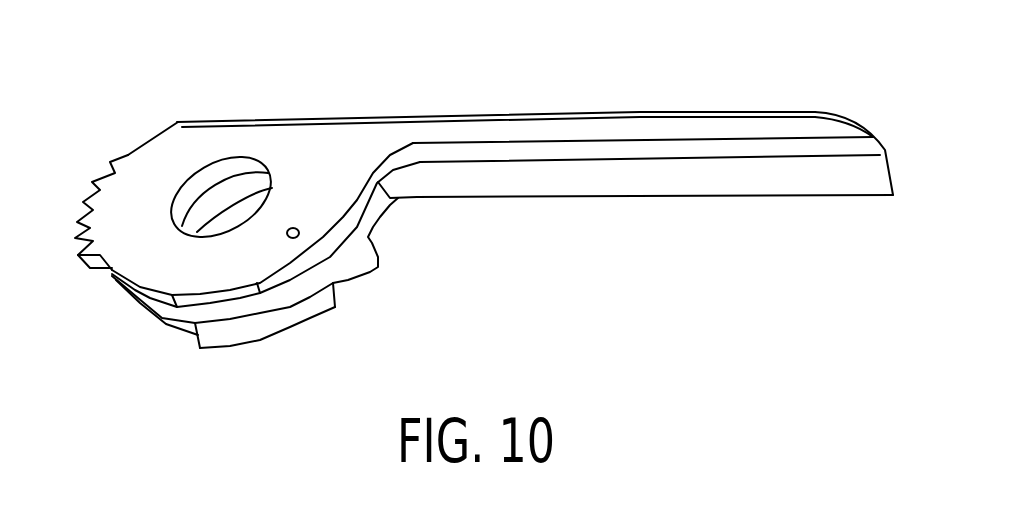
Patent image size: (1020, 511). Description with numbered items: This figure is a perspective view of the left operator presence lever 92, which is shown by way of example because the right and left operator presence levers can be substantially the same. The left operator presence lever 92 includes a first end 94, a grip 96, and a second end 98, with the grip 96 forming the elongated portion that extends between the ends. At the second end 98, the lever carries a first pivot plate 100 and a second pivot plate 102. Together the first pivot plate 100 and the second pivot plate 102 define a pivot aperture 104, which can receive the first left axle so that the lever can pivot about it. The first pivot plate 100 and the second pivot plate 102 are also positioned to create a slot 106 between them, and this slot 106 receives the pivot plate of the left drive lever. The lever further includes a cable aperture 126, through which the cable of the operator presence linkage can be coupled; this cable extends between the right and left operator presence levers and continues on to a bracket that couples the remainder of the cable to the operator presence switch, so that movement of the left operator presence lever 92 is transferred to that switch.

The left operator presence lever 92 is at (468, 82).
The first end 94 is at (830, 130).
The grip 96 is at (658, 178).
The second end 98 is at (150, 138).
The first pivot plate 100 is at (135, 248).
The second pivot plate 102 is at (222, 322).
The pivot aperture 104 is at (232, 185).
The slot 106 is at (258, 292).
The cable aperture 126 is at (300, 235).